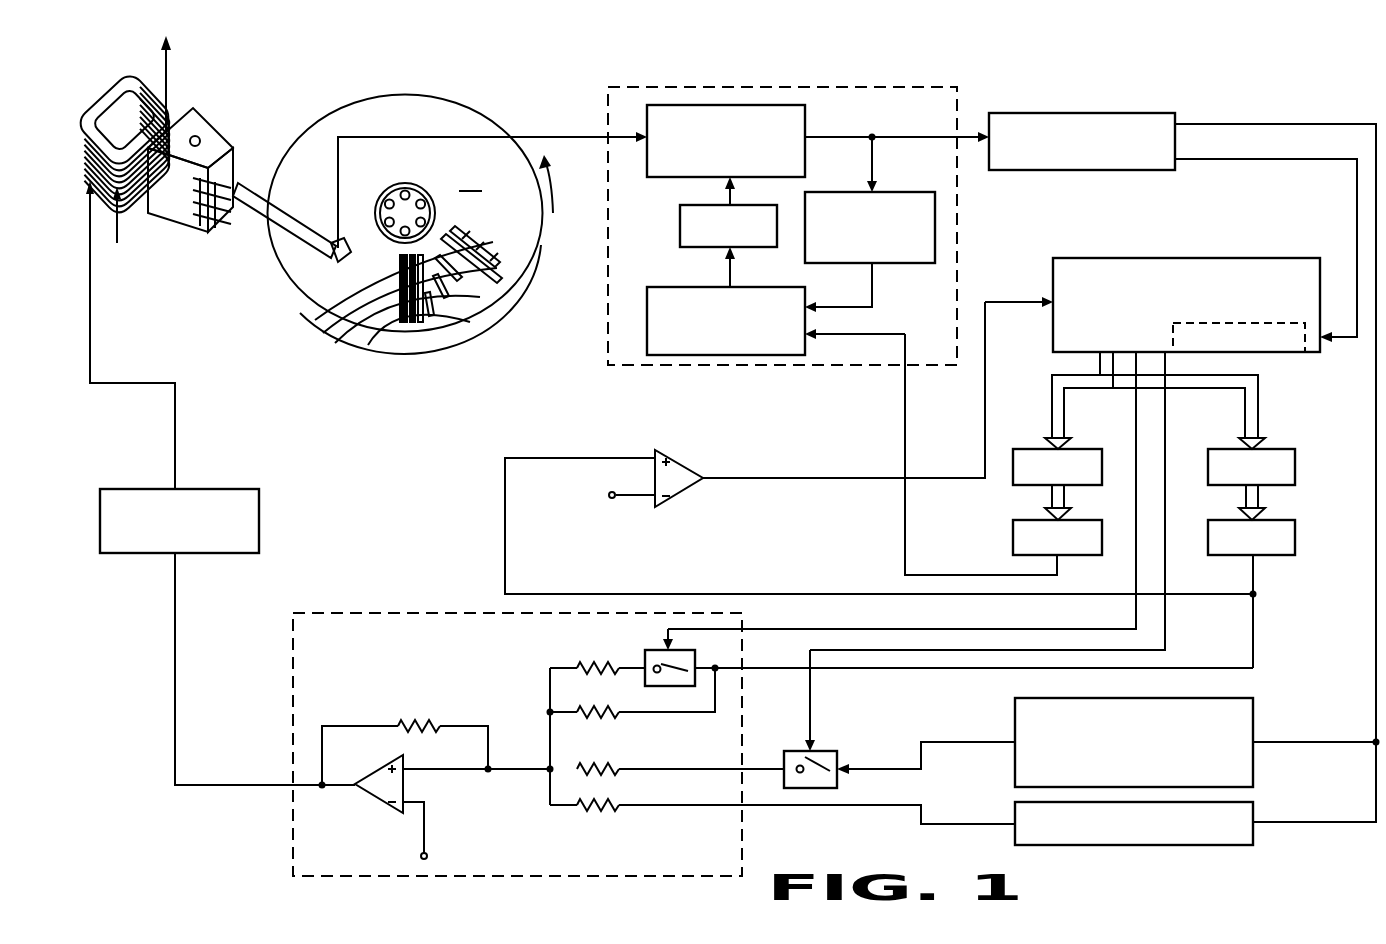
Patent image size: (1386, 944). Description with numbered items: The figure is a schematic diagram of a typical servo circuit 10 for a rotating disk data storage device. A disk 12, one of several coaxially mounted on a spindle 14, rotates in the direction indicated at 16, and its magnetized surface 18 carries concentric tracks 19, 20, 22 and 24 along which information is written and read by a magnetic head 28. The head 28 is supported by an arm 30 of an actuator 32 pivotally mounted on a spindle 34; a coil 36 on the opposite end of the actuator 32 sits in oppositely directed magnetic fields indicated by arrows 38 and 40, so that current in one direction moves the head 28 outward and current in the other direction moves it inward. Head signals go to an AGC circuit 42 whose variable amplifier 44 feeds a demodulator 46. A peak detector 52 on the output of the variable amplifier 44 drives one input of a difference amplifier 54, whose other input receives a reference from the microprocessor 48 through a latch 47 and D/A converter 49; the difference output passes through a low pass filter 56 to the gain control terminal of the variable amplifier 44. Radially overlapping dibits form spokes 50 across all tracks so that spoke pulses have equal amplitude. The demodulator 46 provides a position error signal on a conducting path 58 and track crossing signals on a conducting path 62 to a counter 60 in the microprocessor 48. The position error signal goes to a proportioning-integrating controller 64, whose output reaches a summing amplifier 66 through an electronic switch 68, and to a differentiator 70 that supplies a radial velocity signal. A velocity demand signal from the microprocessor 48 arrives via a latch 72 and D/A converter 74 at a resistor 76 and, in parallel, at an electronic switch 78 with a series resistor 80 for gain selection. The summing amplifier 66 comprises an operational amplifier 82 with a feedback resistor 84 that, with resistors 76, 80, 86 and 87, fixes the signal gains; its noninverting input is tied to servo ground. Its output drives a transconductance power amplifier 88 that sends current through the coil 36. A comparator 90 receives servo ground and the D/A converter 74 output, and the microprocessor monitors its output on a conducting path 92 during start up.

The servo circuit 10 is at (1248, 96).
The disk 12 is at (421, 93).
The spindle 14 is at (417, 198).
The direction of rotation 16 is at (552, 191).
The disk surface 18 is at (471, 180).
The track 19 is at (322, 310).
The track 20 is at (333, 333).
The track 22 is at (368, 339).
The track 24 is at (453, 308).
The magnetic head 28 is at (336, 262).
The arm 30 is at (303, 228).
The actuator 32 is at (231, 136).
The spindle 34 is at (198, 130).
The coil 36 is at (122, 82).
The arrow 38 is at (169, 62).
The arrow 40 is at (118, 243).
The AGC circuit 42 is at (841, 80).
The variable amplifier 44 is at (718, 105).
The demodulator 46 is at (1083, 113).
The latch 47 is at (1040, 448).
The microprocessor 48 is at (1230, 258).
The D/A converter 49 is at (1013, 538).
The spokes 50 is at (541, 246).
The peak detector 52 is at (933, 225).
The difference amplifier 54 is at (710, 355).
The low pass filter 56 is at (681, 222).
The conducting path 58 is at (1376, 416).
The counter 60 is at (1305, 352).
The conducting path 62 is at (1357, 193).
The proportioning-integrating controller 64 is at (1237, 718).
The summing amplifier 66 is at (422, 606).
The electronic switch 68 is at (825, 750).
The differentiator 70 is at (1240, 845).
The latch 72 is at (1295, 468).
The D/A converter 74 is at (1295, 540).
The resistor 76 is at (605, 717).
The electronic switch 78 is at (645, 650).
The series resistor 80 is at (576, 661).
The operational amplifier 82 is at (382, 800).
The feedback resistor 84 is at (428, 720).
The resistor 86 is at (612, 775).
The resistor 87 is at (612, 811).
The transconductance power amplifier 88 is at (228, 489).
The comparator 90 is at (686, 462).
The conducting path 92 is at (806, 478).